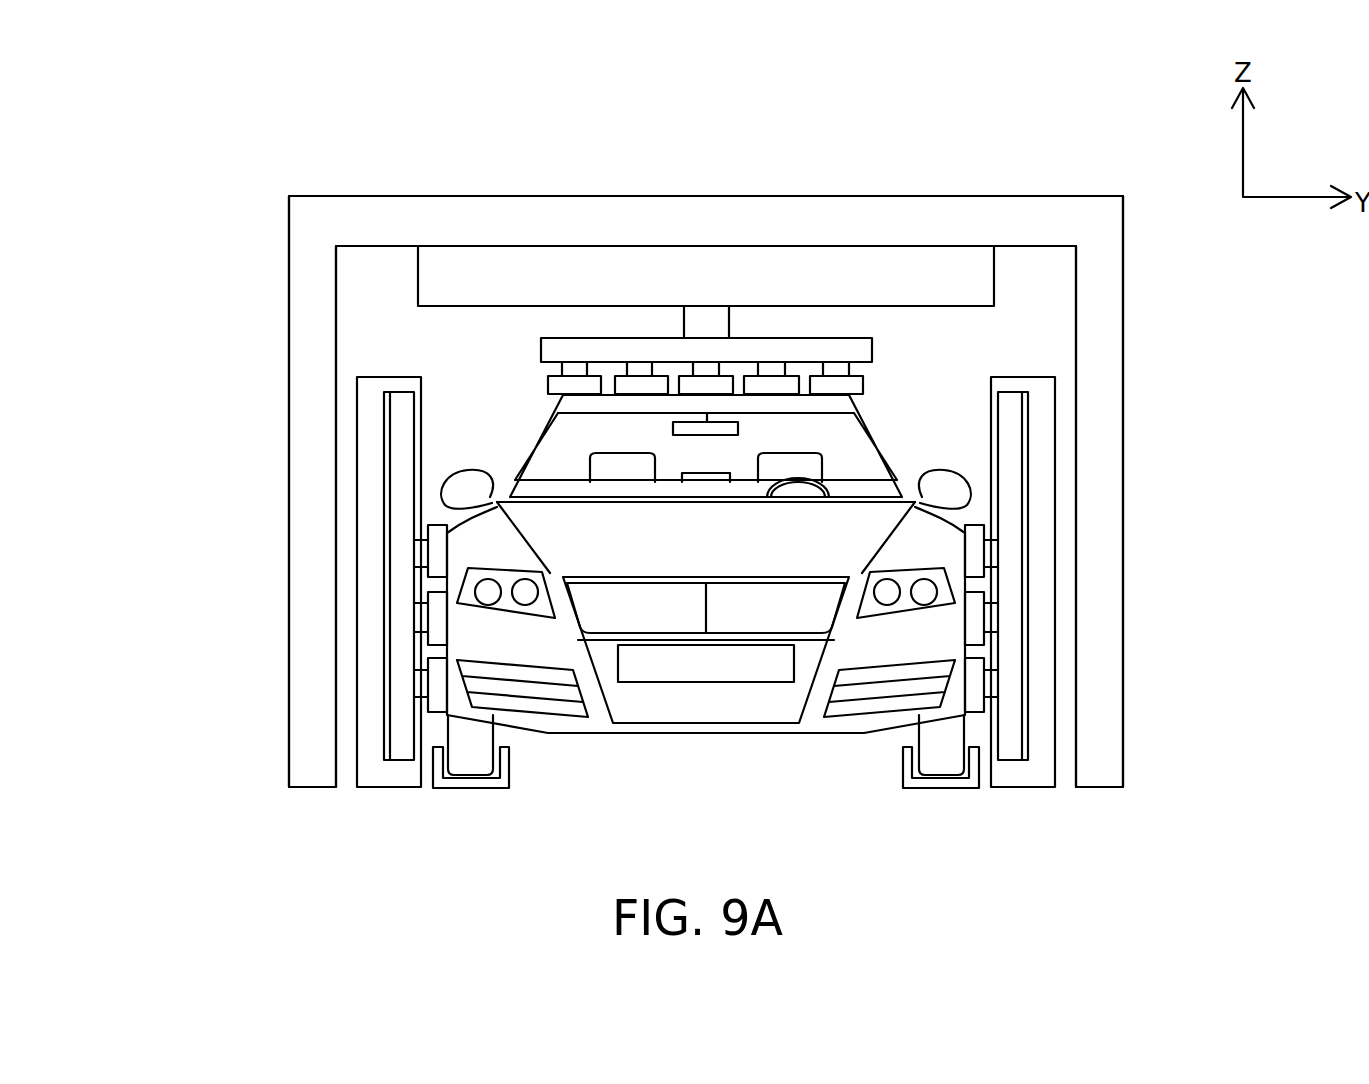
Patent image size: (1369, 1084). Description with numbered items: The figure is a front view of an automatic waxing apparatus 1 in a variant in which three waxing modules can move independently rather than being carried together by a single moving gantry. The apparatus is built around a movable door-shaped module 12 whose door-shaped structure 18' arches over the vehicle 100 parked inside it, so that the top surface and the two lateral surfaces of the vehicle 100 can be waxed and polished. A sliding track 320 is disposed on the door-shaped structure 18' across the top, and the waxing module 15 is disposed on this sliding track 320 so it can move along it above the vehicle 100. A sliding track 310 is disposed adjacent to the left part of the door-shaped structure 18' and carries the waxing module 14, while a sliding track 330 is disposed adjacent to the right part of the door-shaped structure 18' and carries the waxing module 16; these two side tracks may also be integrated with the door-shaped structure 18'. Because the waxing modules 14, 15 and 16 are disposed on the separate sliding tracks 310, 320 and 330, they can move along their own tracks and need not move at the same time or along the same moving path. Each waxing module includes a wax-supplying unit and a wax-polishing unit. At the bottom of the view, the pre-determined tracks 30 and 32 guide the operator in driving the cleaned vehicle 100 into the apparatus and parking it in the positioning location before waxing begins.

The automatic waxing apparatus 1 is at (54, 85).
The door-shaped structure 18' is at (706, 463).
The sliding track 320 is at (978, 280).
The waxing module 15 is at (541, 345).
The sliding track 310 is at (370, 493).
The sliding track 330 is at (1040, 497).
The waxing module 14 is at (400, 610).
The waxing module 16 is at (1010, 608).
The track 30 is at (468, 790).
The track 32 is at (944, 790).
The vehicle 100 is at (878, 440).
The movable door-shaped module 12 is at (1199, 564).